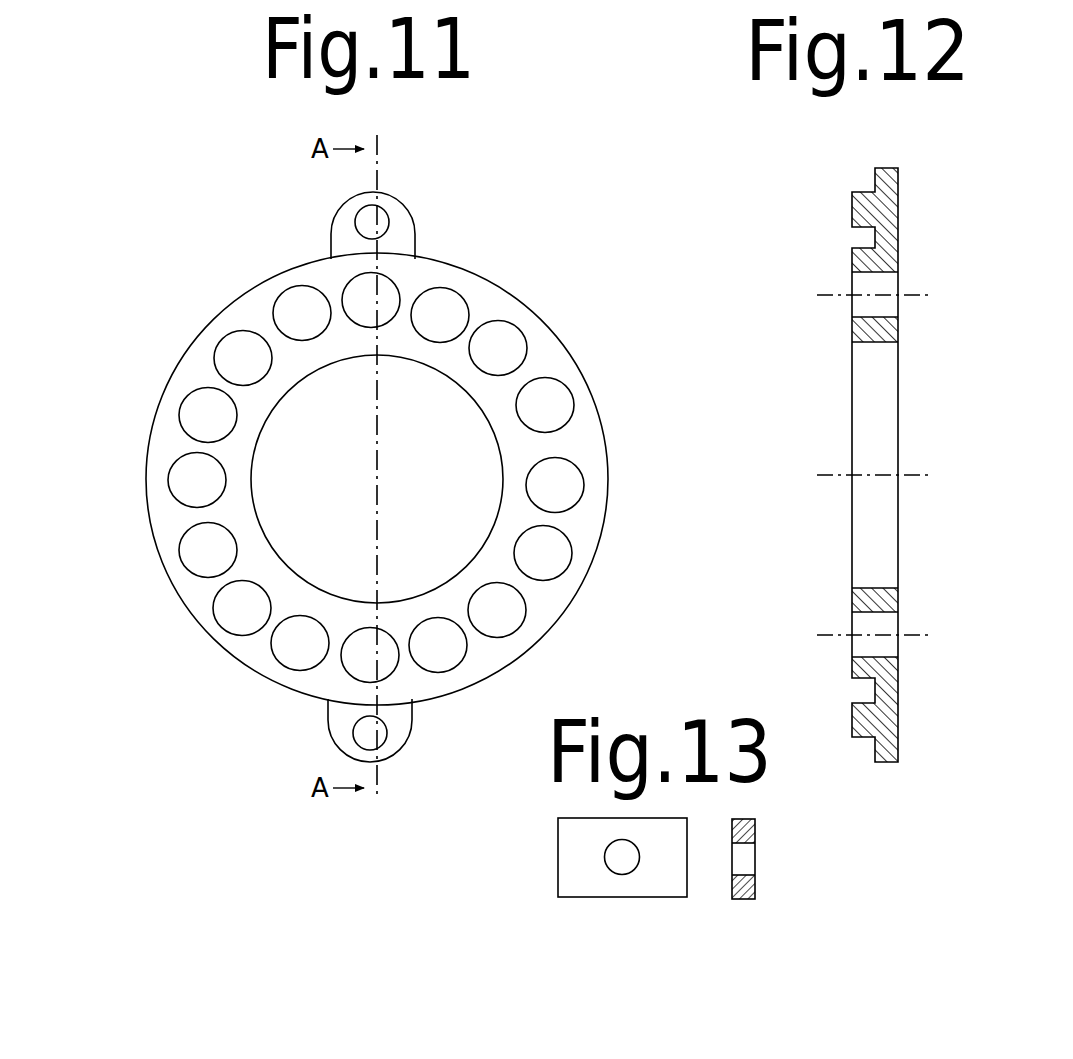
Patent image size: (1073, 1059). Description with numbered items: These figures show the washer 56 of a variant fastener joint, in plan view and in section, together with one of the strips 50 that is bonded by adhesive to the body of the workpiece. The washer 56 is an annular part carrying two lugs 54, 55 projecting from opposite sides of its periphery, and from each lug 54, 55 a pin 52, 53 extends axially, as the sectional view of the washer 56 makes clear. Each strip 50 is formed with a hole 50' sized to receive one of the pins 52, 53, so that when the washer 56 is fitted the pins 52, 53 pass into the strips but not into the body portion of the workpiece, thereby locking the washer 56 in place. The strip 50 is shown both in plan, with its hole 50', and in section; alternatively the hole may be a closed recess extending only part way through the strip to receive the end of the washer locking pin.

In FIG. 13, the strip 50 is at (658, 852).
In FIG. 13, the hole 50' is at (672, 871).
In FIG. 11, the pin 52 is at (362, 219).
In FIG. 12, the pin 52 is at (857, 212).
In FIG. 11, the pin 53 is at (362, 733).
In FIG. 12, the pin 53 is at (857, 727).
In FIG. 11, the lug 54 is at (395, 228).
In FIG. 11, the lug 55 is at (395, 723).
In FIG. 11, the washer 56 is at (505, 338).